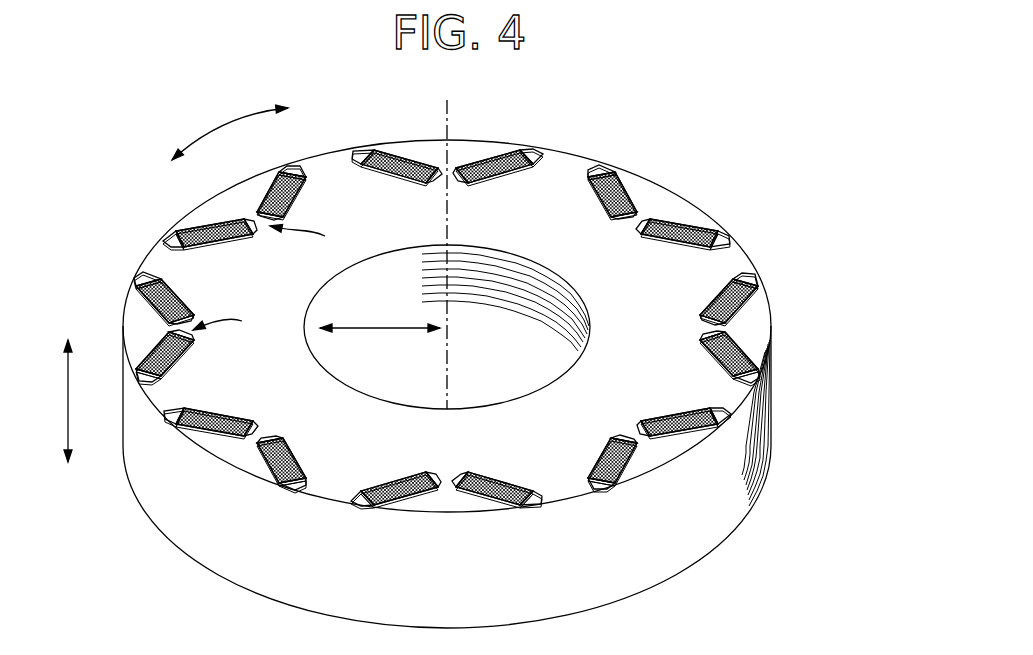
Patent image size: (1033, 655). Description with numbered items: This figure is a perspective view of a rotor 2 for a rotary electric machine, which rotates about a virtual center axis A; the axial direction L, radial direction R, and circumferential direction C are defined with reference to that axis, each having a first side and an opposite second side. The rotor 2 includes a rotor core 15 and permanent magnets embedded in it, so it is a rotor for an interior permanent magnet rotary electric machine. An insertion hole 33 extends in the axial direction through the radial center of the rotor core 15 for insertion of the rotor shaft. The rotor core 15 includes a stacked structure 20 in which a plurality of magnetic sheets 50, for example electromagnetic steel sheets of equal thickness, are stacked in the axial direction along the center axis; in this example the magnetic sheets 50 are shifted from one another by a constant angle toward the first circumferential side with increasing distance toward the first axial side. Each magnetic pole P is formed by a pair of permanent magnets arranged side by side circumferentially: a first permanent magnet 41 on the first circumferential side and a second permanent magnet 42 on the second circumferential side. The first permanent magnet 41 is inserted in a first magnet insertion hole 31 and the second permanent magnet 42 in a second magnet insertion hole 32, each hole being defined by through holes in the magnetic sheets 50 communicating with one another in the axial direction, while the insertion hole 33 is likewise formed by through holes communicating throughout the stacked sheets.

The rotor 2 is at (768, 127).
The rotor core 15 is at (576, 151).
The stacked structure 20 is at (744, 240).
The first magnet insertion hole 31 is at (748, 378).
The second magnet insertion hole 32 is at (740, 280).
The insertion hole 33 is at (338, 372).
The first permanent magnet 41 is at (746, 350).
The second permanent magnet 42 is at (748, 305).
The magnetic sheet 50 is at (537, 262).